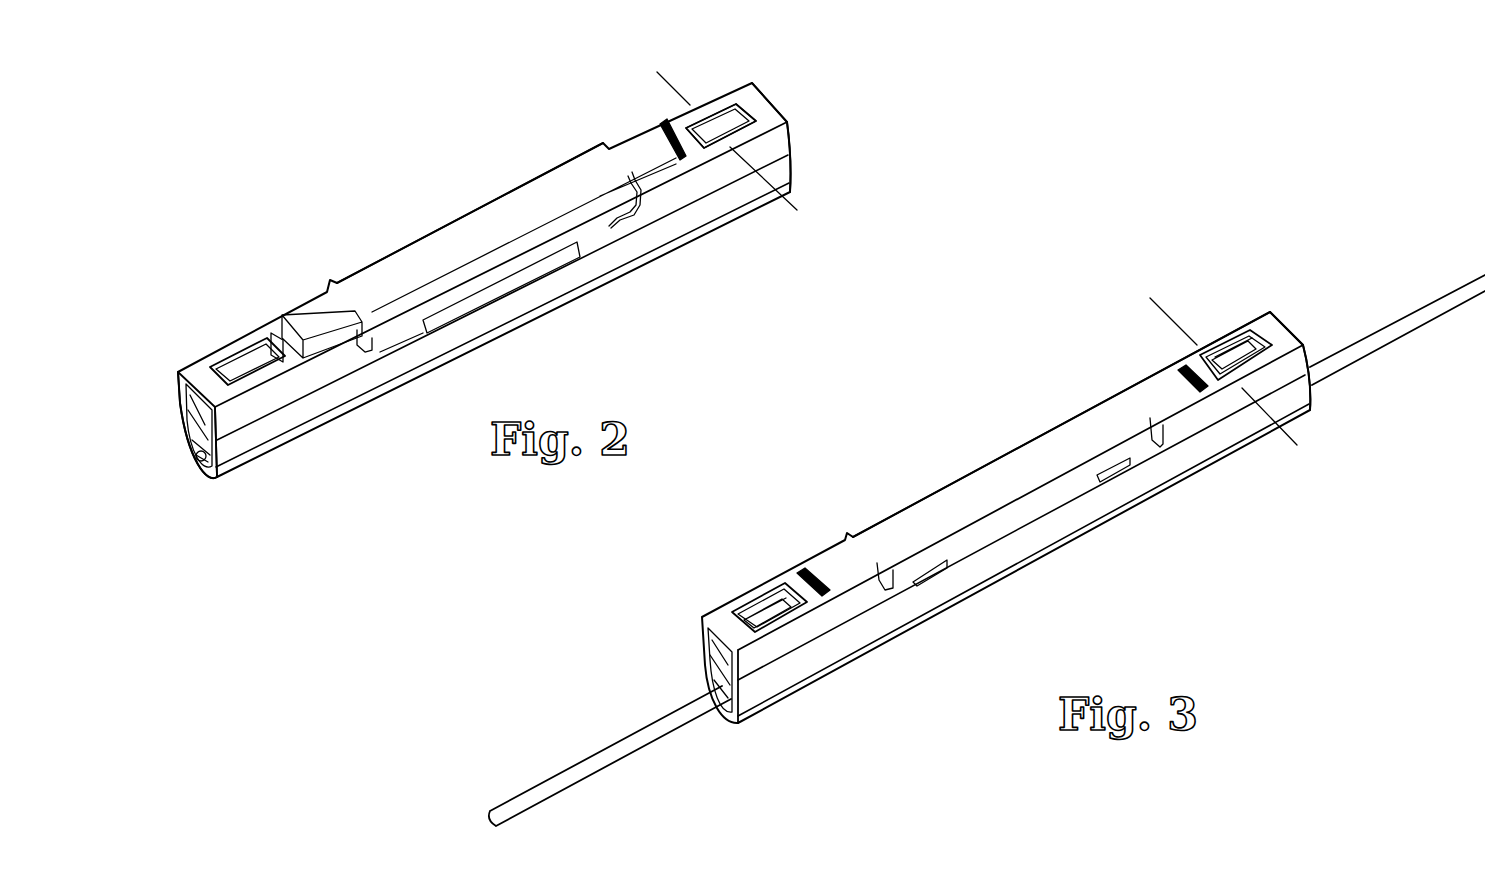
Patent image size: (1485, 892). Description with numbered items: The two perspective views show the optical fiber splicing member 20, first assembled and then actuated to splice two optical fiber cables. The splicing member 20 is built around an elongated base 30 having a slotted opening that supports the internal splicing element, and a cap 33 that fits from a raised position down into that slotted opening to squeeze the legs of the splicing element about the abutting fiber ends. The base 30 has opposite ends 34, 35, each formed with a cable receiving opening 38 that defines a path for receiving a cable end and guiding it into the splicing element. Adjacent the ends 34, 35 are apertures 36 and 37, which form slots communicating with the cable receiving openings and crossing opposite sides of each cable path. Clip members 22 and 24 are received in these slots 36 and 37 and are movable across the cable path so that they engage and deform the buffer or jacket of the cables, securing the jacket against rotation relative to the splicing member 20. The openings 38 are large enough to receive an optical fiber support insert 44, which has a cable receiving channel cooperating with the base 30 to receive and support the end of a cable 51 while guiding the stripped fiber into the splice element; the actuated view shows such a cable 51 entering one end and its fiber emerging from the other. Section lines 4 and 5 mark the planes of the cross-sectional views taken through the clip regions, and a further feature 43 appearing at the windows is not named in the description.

In FIG. 2, the optical fiber splicing member 20 is at (392, 195).
In FIG. 3, the optical fiber splicing member 20 is at (910, 475).
In FIG. 2, the clip member 22 is at (231, 357).
In FIG. 3, the clip member 22 is at (742, 598).
In FIG. 2, the clip member 24 is at (690, 116).
In FIG. 3, the clip member 24 is at (1243, 331).
In FIG. 2, the base 30 is at (697, 250).
In FIG. 3, the base 30 is at (1177, 500).
In FIG. 2, the cap 33 is at (490, 194).
In FIG. 3, the cap 33 is at (1016, 446).
In FIG. 2, the end 34 is at (176, 388).
In FIG. 2, the end 35 is at (768, 102).
In FIG. 3, the end 35 is at (1285, 323).
In FIG. 3, the aperture 36 is at (779, 586).
In FIG. 3, the aperture 37 is at (1238, 345).
In FIG. 3, the cable receiving opening 38 is at (702, 655).
In FIG. 2, the window recess 43 is at (243, 360).
In FIG. 2, the insert 44 is at (187, 417).
In FIG. 3, the cable 51 is at (535, 775).
In FIG. 2, the section line 4- 4 is at (660, 73).
In FIG. 3, the section line 5- 5 is at (1155, 298).